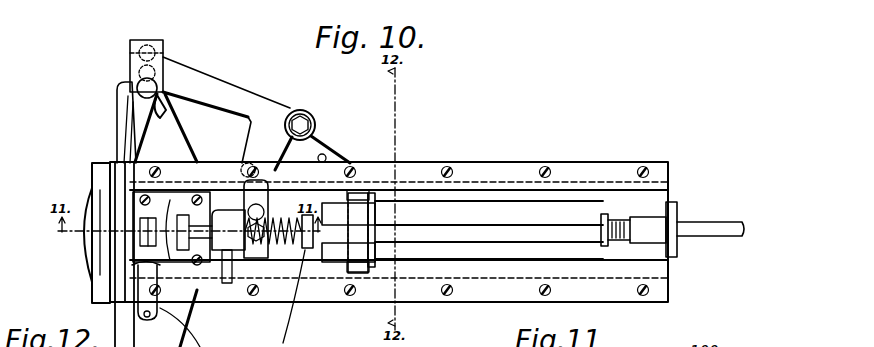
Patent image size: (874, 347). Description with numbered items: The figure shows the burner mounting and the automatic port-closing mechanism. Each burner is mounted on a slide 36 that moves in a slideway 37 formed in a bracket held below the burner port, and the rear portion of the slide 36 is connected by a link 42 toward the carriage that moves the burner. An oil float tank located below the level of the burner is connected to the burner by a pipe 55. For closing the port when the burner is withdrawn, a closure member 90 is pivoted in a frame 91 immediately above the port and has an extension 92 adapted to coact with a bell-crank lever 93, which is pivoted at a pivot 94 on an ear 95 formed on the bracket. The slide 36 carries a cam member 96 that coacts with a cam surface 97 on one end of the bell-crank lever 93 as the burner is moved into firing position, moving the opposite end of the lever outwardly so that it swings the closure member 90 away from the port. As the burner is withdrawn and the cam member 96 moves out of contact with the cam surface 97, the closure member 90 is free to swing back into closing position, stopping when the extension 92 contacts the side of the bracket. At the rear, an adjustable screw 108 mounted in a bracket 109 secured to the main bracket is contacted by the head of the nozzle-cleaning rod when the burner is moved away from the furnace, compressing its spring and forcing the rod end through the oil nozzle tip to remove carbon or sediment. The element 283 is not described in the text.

The slideway 37 is at (483, 302).
The link 42 is at (470, 226).
The pipe 55 is at (225, 285).
The slide 36 is at (337, 250).
The closure member 90 is at (117, 110).
The frame 91 is at (100, 240).
The extension 92 is at (163, 57).
The bell-crank lever 93 is at (222, 93).
The pivot 94 is at (318, 143).
The ear 95 is at (320, 150).
The cam member 96 is at (245, 180).
The cam surface 97 is at (294, 112).
The adjustable screw 108 is at (602, 214).
The bracket 109 is at (670, 226).
The plunger housing 283 is at (188, 256).